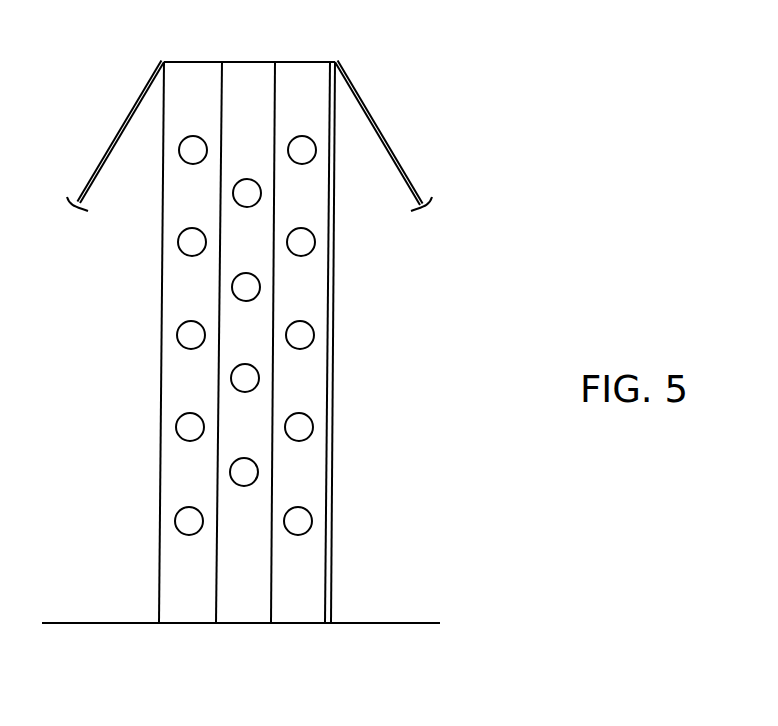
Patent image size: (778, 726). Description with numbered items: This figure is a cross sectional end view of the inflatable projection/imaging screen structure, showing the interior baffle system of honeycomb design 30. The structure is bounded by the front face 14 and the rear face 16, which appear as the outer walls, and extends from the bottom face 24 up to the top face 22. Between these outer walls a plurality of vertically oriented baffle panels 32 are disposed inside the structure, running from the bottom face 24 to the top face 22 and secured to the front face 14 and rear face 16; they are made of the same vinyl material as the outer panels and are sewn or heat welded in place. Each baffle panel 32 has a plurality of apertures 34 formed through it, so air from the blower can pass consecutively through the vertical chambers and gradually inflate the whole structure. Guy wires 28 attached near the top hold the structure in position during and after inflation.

The front face 14 is at (329, 430).
The rear face 16 is at (160, 550).
The top face 22 is at (186, 62).
The bottom face 24 is at (174, 623).
The guy wires 28 is at (102, 162).
The honeycomb design baffles 30 is at (430, 317).
The baffle panels 32 is at (250, 72).
The apertures 34 is at (186, 243).